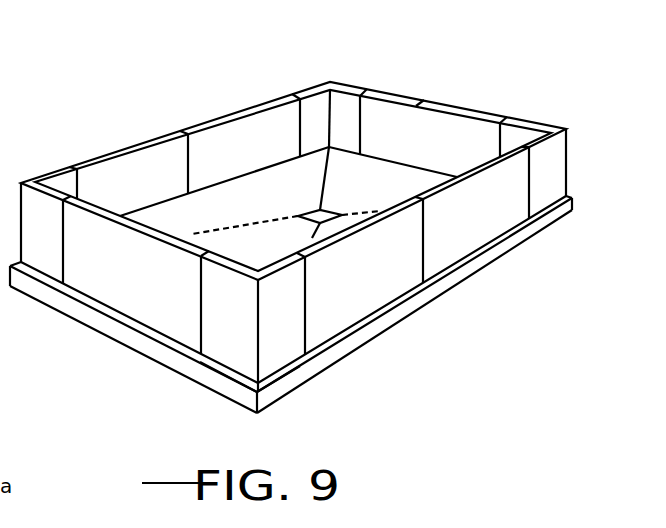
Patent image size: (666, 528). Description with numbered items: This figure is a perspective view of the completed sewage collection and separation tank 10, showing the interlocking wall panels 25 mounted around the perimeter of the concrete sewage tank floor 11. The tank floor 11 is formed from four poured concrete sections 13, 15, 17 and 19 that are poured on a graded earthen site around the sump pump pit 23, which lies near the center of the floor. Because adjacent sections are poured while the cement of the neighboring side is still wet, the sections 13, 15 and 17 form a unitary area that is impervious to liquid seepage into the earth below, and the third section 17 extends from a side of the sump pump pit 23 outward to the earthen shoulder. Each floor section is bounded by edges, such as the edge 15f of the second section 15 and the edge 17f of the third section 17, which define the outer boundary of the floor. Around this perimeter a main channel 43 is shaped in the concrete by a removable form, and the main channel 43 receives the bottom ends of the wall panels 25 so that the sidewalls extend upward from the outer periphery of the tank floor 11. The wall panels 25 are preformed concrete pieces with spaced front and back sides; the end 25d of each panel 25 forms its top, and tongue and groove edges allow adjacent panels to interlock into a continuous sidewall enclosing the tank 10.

The sewage collection and separation tank 10 is at (191, 92).
The sewage tank floor 11 is at (375, 180).
The first section 13 is at (347, 173).
The second section 15 is at (347, 222).
The edge of second section 15f is at (468, 270).
The third section 17 is at (227, 240).
The edge of third section 17f is at (75, 308).
The fourth section 19 is at (250, 197).
The sump pump pit 23 is at (310, 213).
The wall panels 25 is at (362, 302).
The end of wall panel 25d is at (108, 152).
The main channel 43 is at (210, 362).